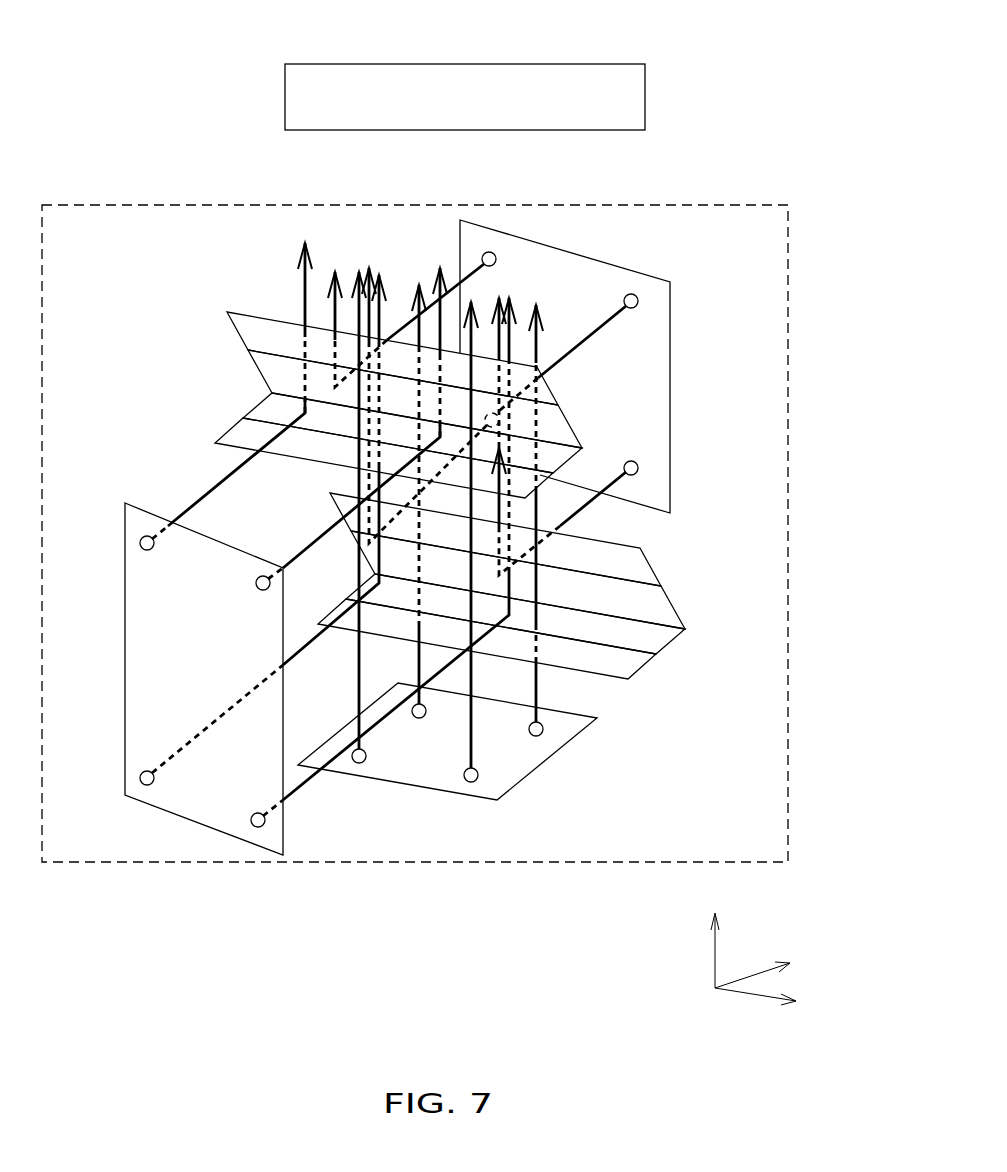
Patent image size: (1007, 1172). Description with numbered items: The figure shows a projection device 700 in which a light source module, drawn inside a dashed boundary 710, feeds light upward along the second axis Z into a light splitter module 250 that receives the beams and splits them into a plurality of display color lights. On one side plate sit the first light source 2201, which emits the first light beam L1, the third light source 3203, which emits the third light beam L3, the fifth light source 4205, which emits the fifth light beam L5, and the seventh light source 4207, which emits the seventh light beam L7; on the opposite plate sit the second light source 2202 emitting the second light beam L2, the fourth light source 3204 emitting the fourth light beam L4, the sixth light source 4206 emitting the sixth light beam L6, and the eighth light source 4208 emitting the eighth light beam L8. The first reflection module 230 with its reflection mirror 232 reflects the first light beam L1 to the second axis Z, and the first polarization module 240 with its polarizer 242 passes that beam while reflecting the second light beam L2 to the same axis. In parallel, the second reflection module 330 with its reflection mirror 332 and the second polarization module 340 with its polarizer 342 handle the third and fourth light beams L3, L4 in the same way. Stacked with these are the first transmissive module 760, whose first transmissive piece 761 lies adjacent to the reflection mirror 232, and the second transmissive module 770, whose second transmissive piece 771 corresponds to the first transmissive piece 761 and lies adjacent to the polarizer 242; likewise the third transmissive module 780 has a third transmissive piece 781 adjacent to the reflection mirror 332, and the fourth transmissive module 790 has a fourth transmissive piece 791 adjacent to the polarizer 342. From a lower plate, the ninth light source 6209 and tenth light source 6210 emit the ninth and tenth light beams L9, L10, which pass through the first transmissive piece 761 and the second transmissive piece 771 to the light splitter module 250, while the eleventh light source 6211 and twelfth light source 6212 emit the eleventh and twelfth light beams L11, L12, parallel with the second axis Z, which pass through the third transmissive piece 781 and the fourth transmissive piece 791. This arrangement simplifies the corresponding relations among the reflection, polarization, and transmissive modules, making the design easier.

The projection device 700 is at (698, 160).
The substrate region 710 is at (339, 863).
The light splitter module 250 is at (285, 98).
The second transmissive module 770 is at (306, 354).
The second transmissive piece 771 is at (253, 335).
The first polarization module 240 is at (318, 393).
The polarizer 242 is at (270, 370).
The first reflection module 230 is at (323, 421).
The reflection mirror 232 is at (270, 407).
The first transmissive module 760 is at (302, 448).
The first transmissive piece 761 is at (233, 428).
The fourth transmissive module 790 is at (591, 539).
The fourth transmissive piece 791 is at (637, 563).
The second polarization module 340 is at (602, 580).
The polarizer 342 is at (650, 603).
The second reflection module 330 is at (596, 614).
The reflection mirror 332 is at (657, 645).
The third transmissive module 780 is at (588, 644).
The third transmissive piece 781 is at (628, 673).
The first light source 2201 is at (146, 551).
The second light source 2202 is at (496, 257).
The third light source 3203 is at (147, 785).
The fourth light source 3204 is at (499, 420).
The fifth light source 4205 is at (260, 591).
The sixth light source 4206 is at (631, 294).
The seventh light source 4207 is at (258, 827).
The eighth light source 4208 is at (638, 468).
The ninth light source 6209 is at (359, 763).
The tenth light source 6210 is at (471, 782).
The eleventh light source 6211 is at (419, 718).
The twelfth light source 6212 is at (536, 736).
The first light beam L1 is at (232, 391).
The second light beam L2 is at (416, 325).
The third light beam L3 is at (264, 524).
The fourth light beam L4 is at (424, 405).
The fifth light beam L5 is at (357, 423).
The sixth light beam L6 is at (559, 368).
The seventh light beam L7 is at (378, 557).
The eighth light beam L8 is at (559, 511).
The ninth light beam L9 is at (347, 510).
The tenth light beam L10 is at (491, 535).
The eleventh light beam L11 is at (400, 494).
The twelfth light beam L12 is at (555, 513).